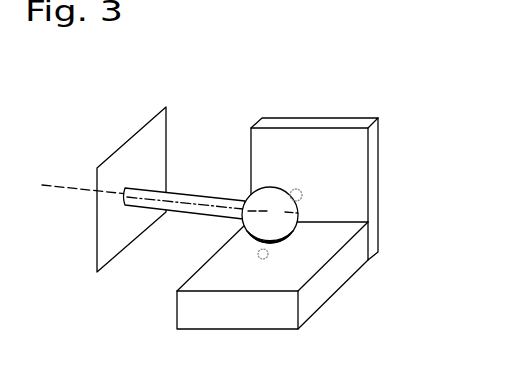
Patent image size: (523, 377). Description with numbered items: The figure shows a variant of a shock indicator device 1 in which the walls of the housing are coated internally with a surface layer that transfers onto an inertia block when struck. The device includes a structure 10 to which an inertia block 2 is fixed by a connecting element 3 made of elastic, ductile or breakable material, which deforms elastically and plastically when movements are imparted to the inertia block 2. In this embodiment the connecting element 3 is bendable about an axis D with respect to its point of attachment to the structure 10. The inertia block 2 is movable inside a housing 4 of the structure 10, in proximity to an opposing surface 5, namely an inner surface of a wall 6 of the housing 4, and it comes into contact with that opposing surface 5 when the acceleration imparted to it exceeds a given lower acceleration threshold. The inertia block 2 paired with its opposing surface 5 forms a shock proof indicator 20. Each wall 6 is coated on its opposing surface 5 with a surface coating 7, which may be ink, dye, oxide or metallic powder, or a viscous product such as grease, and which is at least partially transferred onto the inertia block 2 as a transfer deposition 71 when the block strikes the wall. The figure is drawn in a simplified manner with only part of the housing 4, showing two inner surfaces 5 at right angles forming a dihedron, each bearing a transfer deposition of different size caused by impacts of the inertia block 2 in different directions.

The shock indicator device 1 is at (176, 98).
The inertia block 2 is at (285, 213).
The connecting element 3 is at (191, 196).
The housing 4 is at (198, 263).
The opposing surface 5 is at (322, 160).
The wall 6 is at (372, 178).
The surface coating 7 is at (292, 197).
The structure 10 is at (135, 162).
The shock proof indicator 20 is at (240, 193).
The transfer deposition 71 is at (246, 243).
The axis D is at (65, 191).